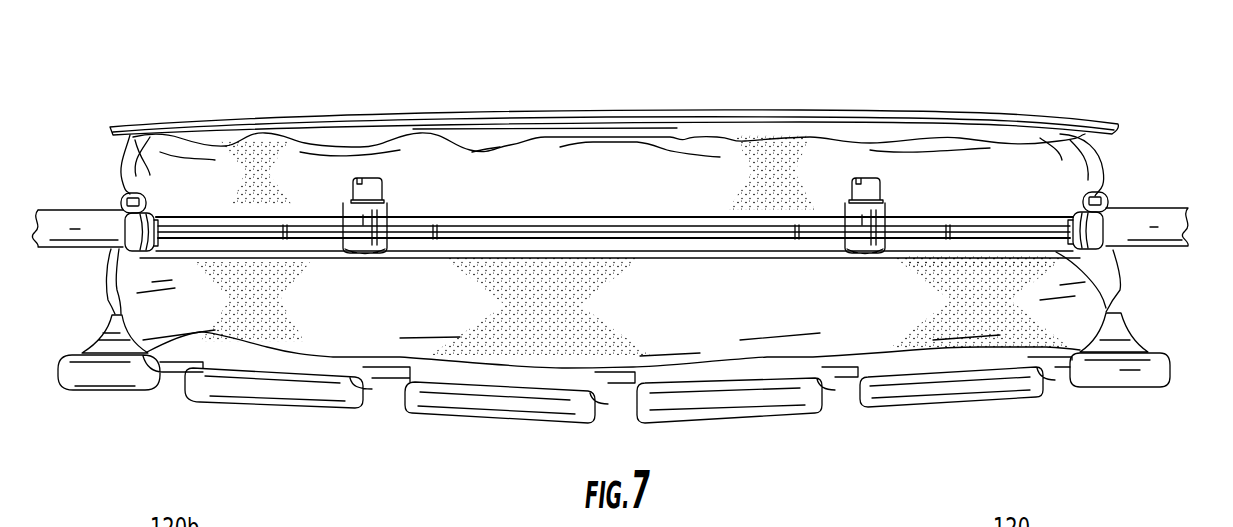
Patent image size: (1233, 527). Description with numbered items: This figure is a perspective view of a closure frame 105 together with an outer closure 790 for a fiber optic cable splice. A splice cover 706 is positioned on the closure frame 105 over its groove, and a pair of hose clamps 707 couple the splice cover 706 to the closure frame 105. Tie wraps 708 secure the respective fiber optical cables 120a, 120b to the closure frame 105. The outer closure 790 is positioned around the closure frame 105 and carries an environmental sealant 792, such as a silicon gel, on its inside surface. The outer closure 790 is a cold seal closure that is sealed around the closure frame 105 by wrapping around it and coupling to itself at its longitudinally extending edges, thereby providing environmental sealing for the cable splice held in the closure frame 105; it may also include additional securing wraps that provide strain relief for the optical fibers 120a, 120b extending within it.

The closure frame 105 is at (1100, 304).
The fiber optical cable 120a is at (1150, 210).
The fiber optical cable 120b is at (76, 211).
The splice cover 706 is at (970, 216).
The hose clamp 707 is at (377, 177).
The tie wrap 708 is at (130, 194).
The outer closure 790 is at (1166, 378).
The environmental sealant 792 is at (208, 153).